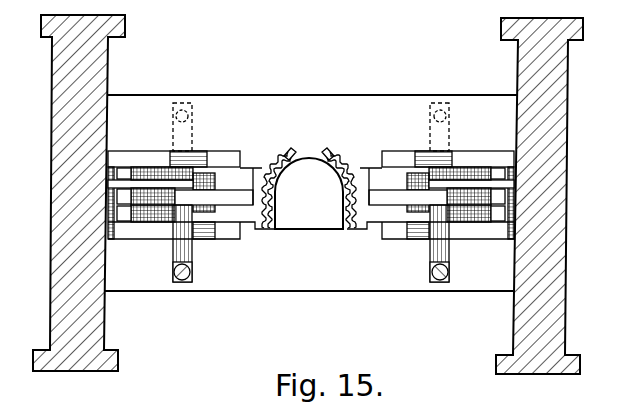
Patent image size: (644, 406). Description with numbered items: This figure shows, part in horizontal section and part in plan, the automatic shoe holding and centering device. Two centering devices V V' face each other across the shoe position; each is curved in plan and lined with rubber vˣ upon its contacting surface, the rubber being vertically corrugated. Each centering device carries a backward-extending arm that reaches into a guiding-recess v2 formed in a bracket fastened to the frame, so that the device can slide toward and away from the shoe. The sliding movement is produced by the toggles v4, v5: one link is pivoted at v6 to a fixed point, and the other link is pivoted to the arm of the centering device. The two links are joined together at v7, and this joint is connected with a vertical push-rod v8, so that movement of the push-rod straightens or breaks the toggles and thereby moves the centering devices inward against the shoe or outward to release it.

The centering device v is at (262, 169).
The guiding-recess v2 is at (365, 174).
The toggle v4 is at (143, 207).
The toggle v5 is at (238, 217).
The pivot v6 is at (121, 170).
The toggle joint v7 is at (180, 196).
The vertical push-rod v8 is at (192, 272).
The rubber lining vx is at (289, 150).